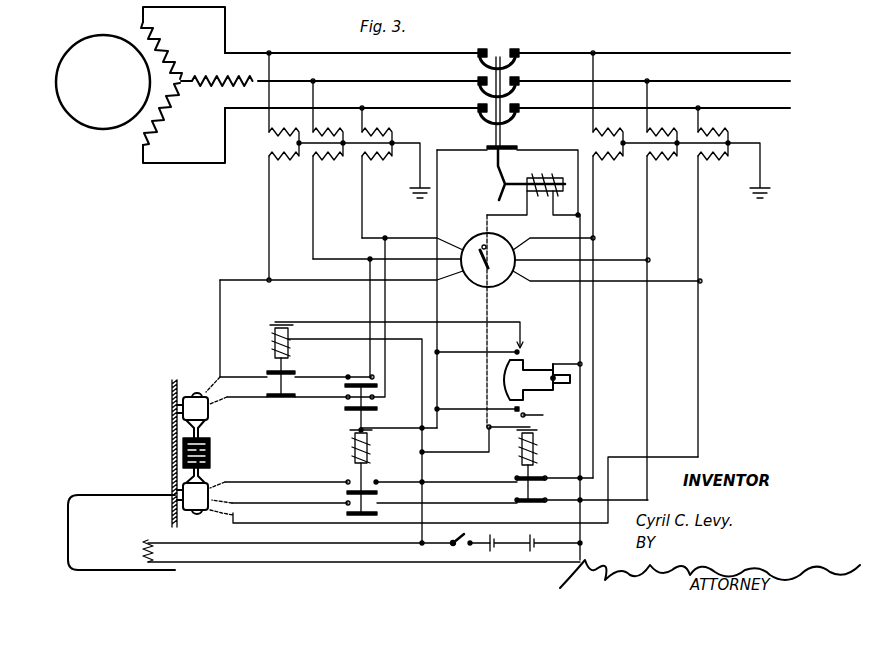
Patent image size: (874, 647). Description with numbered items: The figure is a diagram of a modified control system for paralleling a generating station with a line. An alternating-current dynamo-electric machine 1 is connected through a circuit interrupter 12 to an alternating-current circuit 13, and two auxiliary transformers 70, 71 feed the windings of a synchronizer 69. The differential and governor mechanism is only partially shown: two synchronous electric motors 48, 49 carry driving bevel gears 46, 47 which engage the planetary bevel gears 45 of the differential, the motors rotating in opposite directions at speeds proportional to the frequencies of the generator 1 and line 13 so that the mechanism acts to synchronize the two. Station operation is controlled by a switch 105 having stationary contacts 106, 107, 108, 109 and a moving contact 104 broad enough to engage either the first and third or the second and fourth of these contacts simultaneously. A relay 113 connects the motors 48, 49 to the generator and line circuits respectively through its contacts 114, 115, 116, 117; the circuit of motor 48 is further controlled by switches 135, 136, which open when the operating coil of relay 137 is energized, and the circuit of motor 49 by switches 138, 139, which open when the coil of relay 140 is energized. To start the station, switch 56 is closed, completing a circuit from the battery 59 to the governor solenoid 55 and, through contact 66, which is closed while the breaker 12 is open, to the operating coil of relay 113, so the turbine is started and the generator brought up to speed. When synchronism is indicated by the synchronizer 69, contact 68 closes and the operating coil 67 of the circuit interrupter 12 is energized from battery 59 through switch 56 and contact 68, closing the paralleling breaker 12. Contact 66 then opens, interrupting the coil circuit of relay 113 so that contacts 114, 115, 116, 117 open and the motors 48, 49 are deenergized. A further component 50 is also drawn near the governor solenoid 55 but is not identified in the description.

The alternating-current dynamo-electric machine 1 is at (110, 90).
The circuit interrupter 12 is at (546, 135).
The alternating-current circuit 13 is at (556, 100).
The planetary bevel gears 45 is at (183, 451).
The driving bevel gear 46 is at (200, 433).
The driving bevel gear 47 is at (200, 476).
The synchronous electric motor 48 is at (183, 412).
The synchronous electric motor 49 is at (212, 489).
The battery box 50 is at (112, 525).
The governor solenoid 55 is at (148, 540).
The switch 56 is at (456, 548).
The battery 59 is at (525, 542).
The contact 66 is at (500, 147).
The operating coil 67 is at (549, 181).
The switch of synchronizer 68 is at (461, 321).
The synchronizer 69 is at (498, 287).
The auxiliary transformer 70 is at (262, 153).
The auxiliary transformer 71 is at (764, 136).
The moving contact 104 is at (508, 379).
The switch 105 is at (548, 362).
The stationary contact 106 is at (519, 352).
The stationary contact 107 is at (513, 408).
The stationary contact 108 is at (522, 340).
The stationary contact 109 is at (526, 414).
The relay 113 is at (354, 440).
The contact 114 is at (346, 383).
The contact 115 is at (345, 408).
The contact 116 is at (346, 492).
The contact 117 is at (346, 514).
The switch 135 is at (268, 371).
The switch 136 is at (270, 398).
The relay 137 is at (280, 322).
The switch 138 is at (545, 500).
The switch 139 is at (545, 477).
The relay 140 is at (535, 440).